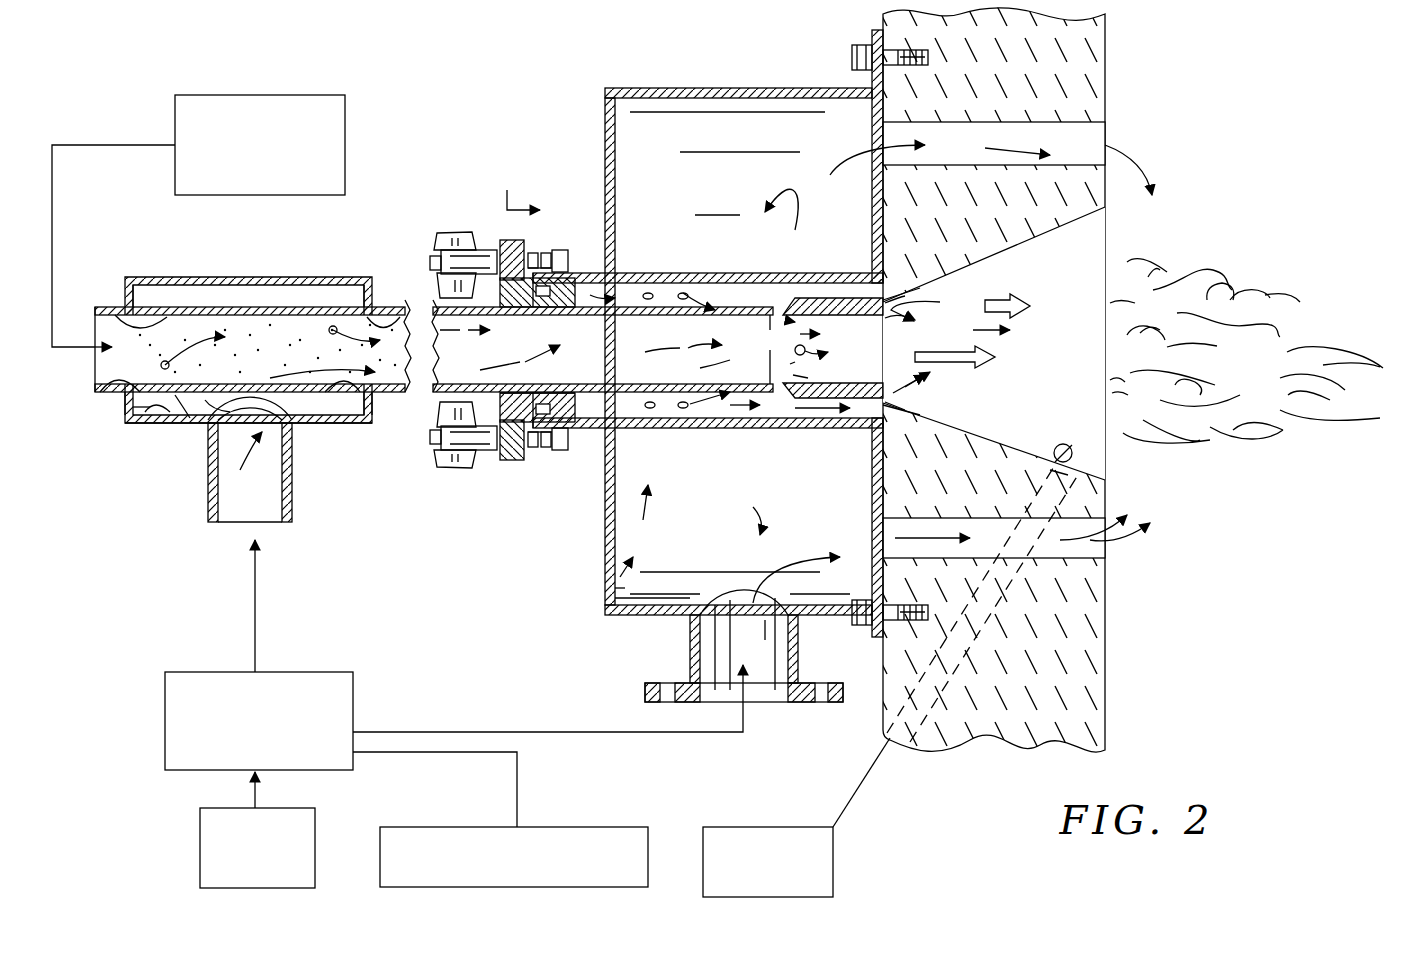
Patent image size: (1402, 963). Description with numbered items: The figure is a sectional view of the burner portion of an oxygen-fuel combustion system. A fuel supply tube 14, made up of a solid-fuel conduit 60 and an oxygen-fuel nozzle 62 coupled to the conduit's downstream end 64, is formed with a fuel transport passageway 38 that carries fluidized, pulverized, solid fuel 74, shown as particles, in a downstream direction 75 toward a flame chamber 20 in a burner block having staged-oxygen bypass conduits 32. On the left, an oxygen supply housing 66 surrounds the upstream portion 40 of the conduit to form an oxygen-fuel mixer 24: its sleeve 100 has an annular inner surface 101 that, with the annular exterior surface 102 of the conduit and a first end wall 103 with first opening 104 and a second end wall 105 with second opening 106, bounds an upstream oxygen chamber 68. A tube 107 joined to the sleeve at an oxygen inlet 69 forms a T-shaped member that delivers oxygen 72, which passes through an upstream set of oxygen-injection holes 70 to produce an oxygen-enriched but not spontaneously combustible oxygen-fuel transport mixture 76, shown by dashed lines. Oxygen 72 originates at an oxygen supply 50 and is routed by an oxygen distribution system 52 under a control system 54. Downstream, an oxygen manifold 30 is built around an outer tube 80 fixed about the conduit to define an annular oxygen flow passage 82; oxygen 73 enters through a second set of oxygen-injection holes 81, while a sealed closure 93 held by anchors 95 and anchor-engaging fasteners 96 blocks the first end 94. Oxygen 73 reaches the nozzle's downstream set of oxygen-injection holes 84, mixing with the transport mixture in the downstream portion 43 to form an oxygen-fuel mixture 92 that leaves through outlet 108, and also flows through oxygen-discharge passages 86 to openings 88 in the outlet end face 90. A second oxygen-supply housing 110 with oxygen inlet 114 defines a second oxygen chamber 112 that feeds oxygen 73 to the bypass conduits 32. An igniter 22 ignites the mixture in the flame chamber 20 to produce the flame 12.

The flame 12 is at (1235, 295).
The fuel supply tube 14 is at (300, 307).
The flame chamber 20 is at (1090, 258).
The igniter 22 is at (833, 848).
The oxygen-fuel mixer 24 is at (140, 450).
The oxygen manifold 30 is at (565, 583).
The staged-oxygen bypass conduits 32 is at (1100, 130).
The fuel transport passageway 38 is at (110, 336).
The upstream portion 40 is at (122, 427).
The downstream portion 43 is at (580, 428).
The oxygen supply 50 is at (353, 697).
The oxygen distribution system 52 is at (285, 672).
The control system 54 is at (443, 827).
The solid-fuel conduit 60 is at (425, 300).
The oxygen-fuel nozzle 62 is at (830, 298).
The downstream end 64 is at (748, 395).
The oxygen supply housing 66 is at (178, 277).
The upstream oxygen chamber 68 is at (370, 423).
The oxygen inlet 69 is at (275, 430).
The upstream set of oxygen-injection holes 70 is at (118, 315).
The oxygen 72 is at (213, 307).
The oxygen 73 is at (672, 283).
The fluidized, pulverized, solid fuel 74 is at (345, 118).
The downstream direction 75 is at (523, 184).
The oxygen-fuel transport mixture 76 is at (535, 365).
The outer tube 80 is at (730, 273).
The second set of oxygen-injection holes 81 is at (650, 283).
The annular oxygen flow passage 82 is at (598, 290).
The downstream set of oxygen-injection holes 84 is at (800, 383).
The oxygen-discharge passages 86 is at (830, 402).
The openings 88 is at (885, 395).
The outlet end face 90 is at (938, 298).
The oxygen-fuel mixture 92 is at (795, 330).
The sealed closure 93 is at (498, 480).
The first end 94 is at (540, 455).
The anchors 95 is at (535, 255).
The anchor-engaging fasteners 96 is at (460, 233).
The sleeve 100 is at (168, 425).
The annular inner surface 101 is at (178, 425).
The annular exterior surface 102 is at (287, 415).
The first end wall 103 is at (128, 288).
The first opening 104 is at (120, 395).
The second end wall 105 is at (362, 397).
The second opening 106 is at (380, 290).
The tube 107 is at (205, 525).
The outlet 108 is at (883, 335).
The second oxygen-supply housing 110 is at (707, 86).
The second oxygen chamber 112 is at (612, 590).
The oxygen inlet 114 is at (705, 625).